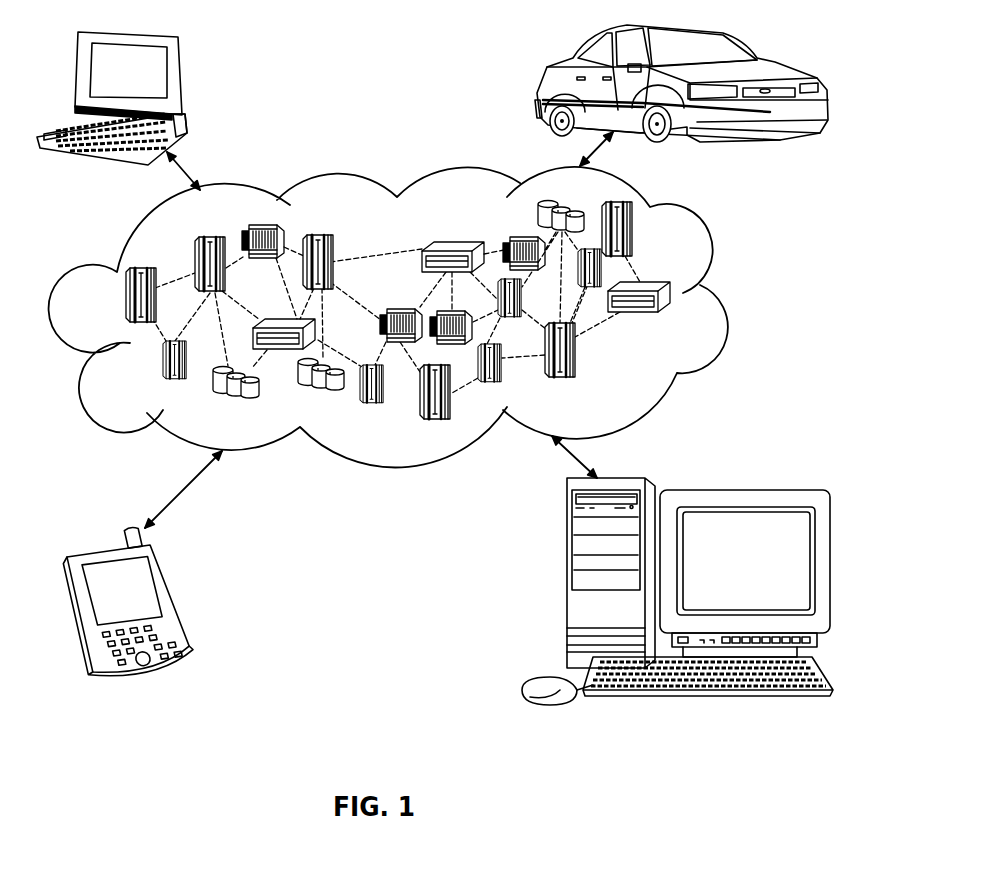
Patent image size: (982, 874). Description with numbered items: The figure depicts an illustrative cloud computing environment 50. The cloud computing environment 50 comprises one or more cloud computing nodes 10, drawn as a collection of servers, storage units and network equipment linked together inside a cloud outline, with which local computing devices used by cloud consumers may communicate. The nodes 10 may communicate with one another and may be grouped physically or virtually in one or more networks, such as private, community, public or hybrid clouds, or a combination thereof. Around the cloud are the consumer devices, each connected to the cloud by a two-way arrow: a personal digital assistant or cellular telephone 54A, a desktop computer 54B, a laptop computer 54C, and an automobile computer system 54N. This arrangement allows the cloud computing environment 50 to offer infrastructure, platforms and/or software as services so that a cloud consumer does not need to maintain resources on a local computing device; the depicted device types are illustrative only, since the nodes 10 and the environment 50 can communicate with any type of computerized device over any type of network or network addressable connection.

The cloud computing nodes 10 is at (687, 317).
The cloud computing environment 50 is at (710, 260).
The personal digital assistant or cellular telephone 54A is at (173, 600).
The desktop computer 54B is at (567, 580).
The laptop computer 54C is at (182, 77).
The automobile computer system 54N is at (543, 80).